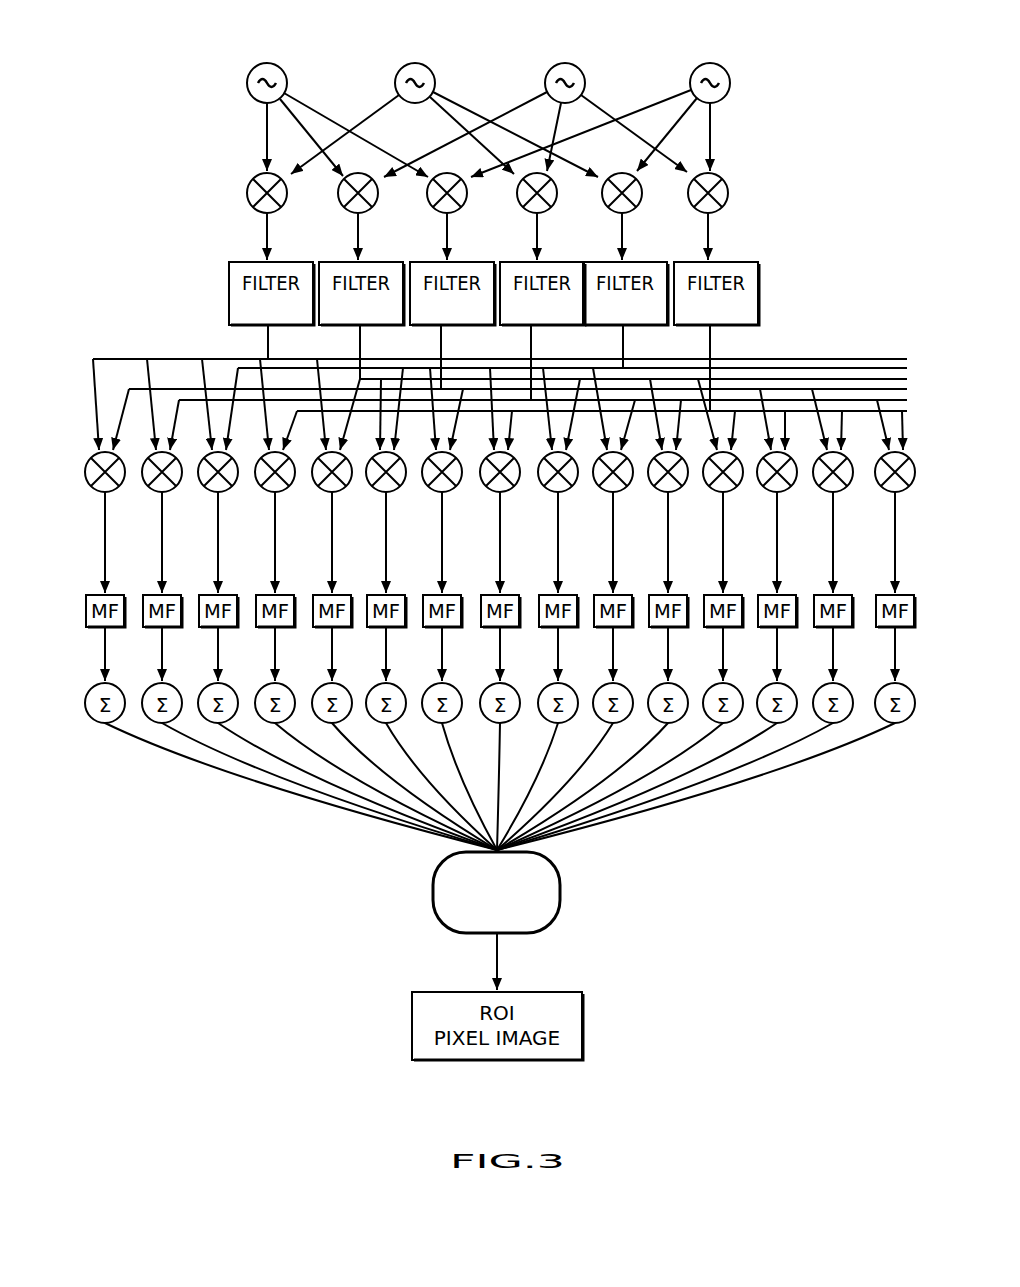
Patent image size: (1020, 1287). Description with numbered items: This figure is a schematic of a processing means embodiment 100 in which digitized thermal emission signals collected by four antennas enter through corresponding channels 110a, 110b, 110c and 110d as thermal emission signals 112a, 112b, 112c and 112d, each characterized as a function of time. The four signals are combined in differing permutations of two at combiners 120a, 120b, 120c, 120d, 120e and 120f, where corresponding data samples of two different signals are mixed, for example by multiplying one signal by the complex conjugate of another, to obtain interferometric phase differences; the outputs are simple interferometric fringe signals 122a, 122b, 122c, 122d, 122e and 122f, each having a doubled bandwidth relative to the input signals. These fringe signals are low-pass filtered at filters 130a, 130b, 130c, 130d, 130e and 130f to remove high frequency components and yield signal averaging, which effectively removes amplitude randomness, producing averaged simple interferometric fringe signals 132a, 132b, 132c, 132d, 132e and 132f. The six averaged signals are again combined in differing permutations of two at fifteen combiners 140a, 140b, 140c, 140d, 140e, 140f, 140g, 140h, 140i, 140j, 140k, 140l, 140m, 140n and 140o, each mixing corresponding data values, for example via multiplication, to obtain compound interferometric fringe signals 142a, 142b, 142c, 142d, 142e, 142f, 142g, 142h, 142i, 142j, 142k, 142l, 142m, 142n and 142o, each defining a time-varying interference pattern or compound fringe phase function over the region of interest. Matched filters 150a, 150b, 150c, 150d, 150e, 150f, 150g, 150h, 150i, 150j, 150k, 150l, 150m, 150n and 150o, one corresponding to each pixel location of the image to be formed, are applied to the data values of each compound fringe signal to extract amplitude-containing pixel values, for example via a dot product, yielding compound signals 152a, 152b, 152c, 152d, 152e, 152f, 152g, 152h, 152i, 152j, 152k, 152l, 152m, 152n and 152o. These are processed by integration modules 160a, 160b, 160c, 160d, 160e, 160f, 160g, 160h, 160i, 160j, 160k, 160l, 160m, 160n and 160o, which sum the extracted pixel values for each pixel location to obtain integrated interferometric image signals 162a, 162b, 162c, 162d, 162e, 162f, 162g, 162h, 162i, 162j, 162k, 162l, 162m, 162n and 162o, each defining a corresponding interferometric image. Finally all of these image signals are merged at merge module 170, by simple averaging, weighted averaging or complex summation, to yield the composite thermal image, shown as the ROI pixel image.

The processing means embodiment 100 is at (848, 172).
The channel 110a is at (250, 90).
The channel 110b is at (398, 90).
The channel 110c is at (548, 78).
The channel 110d is at (694, 80).
The thermal emission signal 112a is at (335, 120).
The thermal emission signal 112b is at (484, 110).
The thermal emission signal 112c is at (580, 108).
The thermal emission signal 112d is at (700, 108).
The combiner 120a is at (248, 199).
The combiner 120b is at (339, 199).
The combiner 120c is at (428, 199).
The combiner 120d is at (518, 199).
The combiner 120e is at (603, 199).
The combiner 120f is at (689, 199).
The simple interferometric fringe signal 122a is at (267, 230).
The simple interferometric fringe signal 122b is at (358, 230).
The simple interferometric fringe signal 122c is at (447, 230).
The simple interferometric fringe signal 122d is at (537, 230).
The simple interferometric fringe signal 122e is at (622, 230).
The simple interferometric fringe signal 122f is at (708, 230).
The filter 130a is at (243, 313).
The filter 130b is at (333, 313).
The filter 130c is at (424, 313).
The filter 130d is at (514, 313).
The filter 130e is at (597, 313).
The filter 130f is at (688, 313).
The averaged simple interferometric fringe signal 132a is at (268, 331).
The averaged simple interferometric fringe signal 132b is at (360, 331).
The averaged simple interferometric fringe signal 132c is at (441, 331).
The averaged simple interferometric fringe signal 132d is at (531, 331).
The averaged simple interferometric fringe signal 132e is at (623, 331).
The averaged simple interferometric fringe signal 132f is at (710, 331).
The combiner 140a is at (94, 441).
The combiner 140b is at (149, 441).
The combiner 140c is at (205, 441).
The combiner 140d is at (263, 441).
The combiner 140e is at (323, 441).
The combiner 140f is at (374, 446).
The combiner 140g is at (430, 446).
The combiner 140h is at (487, 446).
The combiner 140i is at (548, 446).
The combiner 140j is at (603, 446).
The combiner 140k is at (655, 451).
The combiner 140l is at (712, 451).
The combiner 140m is at (762, 456).
The combiner 140n is at (820, 456).
The combiner 140o is at (882, 462).
The compound interferometric fringe signal 142a is at (82, 542).
The compound interferometric fringe signal 142b is at (139, 542).
The compound interferometric fringe signal 142c is at (195, 542).
The compound interferometric fringe signal 142d is at (252, 542).
The compound interferometric fringe signal 142e is at (309, 542).
The compound interferometric fringe signal 142f is at (364, 542).
The compound interferometric fringe signal 142g is at (419, 542).
The compound interferometric fringe signal 142h is at (477, 542).
The compound interferometric fringe signal 142i is at (537, 542).
The compound interferometric fringe signal 142j is at (592, 542).
The compound interferometric fringe signal 142k is at (645, 542).
The compound interferometric fringe signal 142l is at (702, 542).
The compound interferometric fringe signal 142m is at (752, 542).
The compound interferometric fringe signal 142n is at (810, 542).
The compound interferometric fringe signal 142o is at (872, 542).
The matched filter 150a is at (92, 591).
The matched filter 150b is at (149, 591).
The matched filter 150c is at (205, 591).
The matched filter 150d is at (262, 591).
The matched filter 150e is at (319, 591).
The matched filter 150f is at (374, 591).
The matched filter 150g is at (429, 591).
The matched filter 150h is at (487, 591).
The matched filter 150i is at (547, 591).
The matched filter 150j is at (602, 591).
The matched filter 150k is at (655, 591).
The matched filter 150l is at (712, 591).
The matched filter 150m is at (762, 591).
The matched filter 150n is at (820, 591).
The matched filter 150o is at (882, 591).
The compound signal 152a is at (82, 654).
The compound signal 152b is at (139, 654).
The compound signal 152c is at (195, 654).
The compound signal 152d is at (252, 654).
The compound signal 152e is at (309, 654).
The compound signal 152f is at (364, 654).
The compound signal 152g is at (419, 654).
The compound signal 152h is at (477, 654).
The compound signal 152i is at (537, 654).
The compound signal 152j is at (592, 654).
The compound signal 152k is at (645, 654).
The compound signal 152l is at (702, 654).
The compound signal 152m is at (751, 654).
The compound signal 152n is at (810, 654).
The compound signal 152o is at (872, 654).
The integration module 160a is at (92, 690).
The integration module 160b is at (149, 690).
The integration module 160c is at (205, 690).
The integration module 160d is at (262, 690).
The integration module 160e is at (319, 690).
The integration module 160f is at (374, 690).
The integration module 160g is at (429, 690).
The integration module 160h is at (487, 690).
The integration module 160i is at (547, 690).
The integration module 160j is at (602, 690).
The integration module 160k is at (655, 690).
The integration module 160l is at (712, 690).
The integration module 160m is at (762, 690).
The integration module 160n is at (820, 690).
The integration module 160o is at (882, 690).
The integrated interferometric image signal 162a is at (301, 786).
The integrated interferometric image signal 162b is at (329, 786).
The integrated interferometric image signal 162c is at (357, 786).
The integrated interferometric image signal 162d is at (385, 786).
The integrated interferometric image signal 162e is at (412, 786).
The integrated interferometric image signal 162f is at (431, 796).
The integrated interferometric image signal 162g is at (442, 811).
The integrated interferometric image signal 162h is at (555, 805).
The integrated interferometric image signal 162i is at (567, 792).
The integrated interferometric image signal 162j is at (591, 789).
The integrated interferometric image signal 162k is at (615, 786).
The integrated interferometric image signal 162l is at (639, 786).
The integrated interferometric image signal 162m is at (661, 786).
The integrated interferometric image signal 162n is at (685, 786).
The integrated interferometric image signal 162o is at (712, 786).
The merge module 170 is at (433, 912).